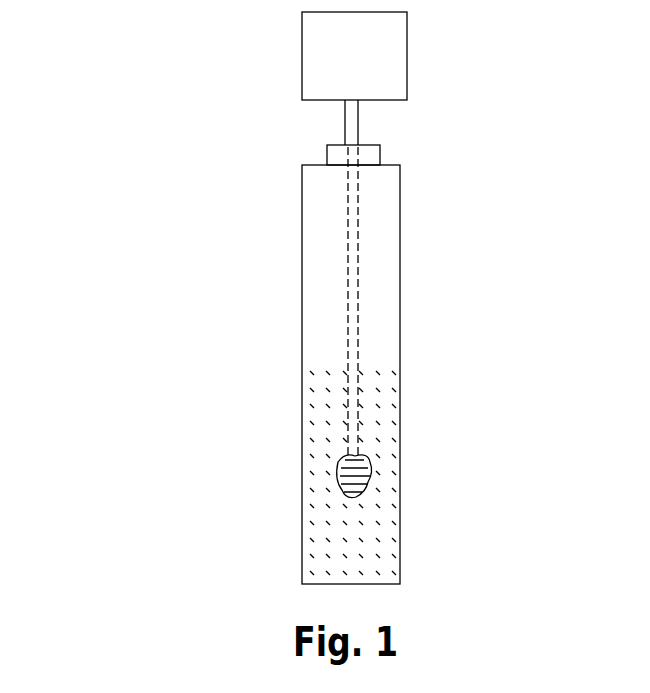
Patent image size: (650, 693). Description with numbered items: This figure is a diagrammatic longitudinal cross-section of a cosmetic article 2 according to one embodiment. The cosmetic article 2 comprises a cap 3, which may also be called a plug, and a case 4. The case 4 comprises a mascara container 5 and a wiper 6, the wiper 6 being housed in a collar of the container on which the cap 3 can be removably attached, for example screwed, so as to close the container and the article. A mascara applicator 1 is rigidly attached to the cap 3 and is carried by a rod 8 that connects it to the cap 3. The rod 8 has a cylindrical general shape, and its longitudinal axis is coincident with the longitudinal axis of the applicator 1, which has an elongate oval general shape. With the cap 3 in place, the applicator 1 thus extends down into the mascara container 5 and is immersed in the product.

The mascara applicator 1 is at (340, 475).
The cosmetic article 2 is at (180, 132).
The cap 3 is at (387, 55).
The case 4 is at (302, 303).
The mascara container 5 is at (400, 436).
The wiper 6 is at (375, 155).
The rod 8 is at (355, 305).